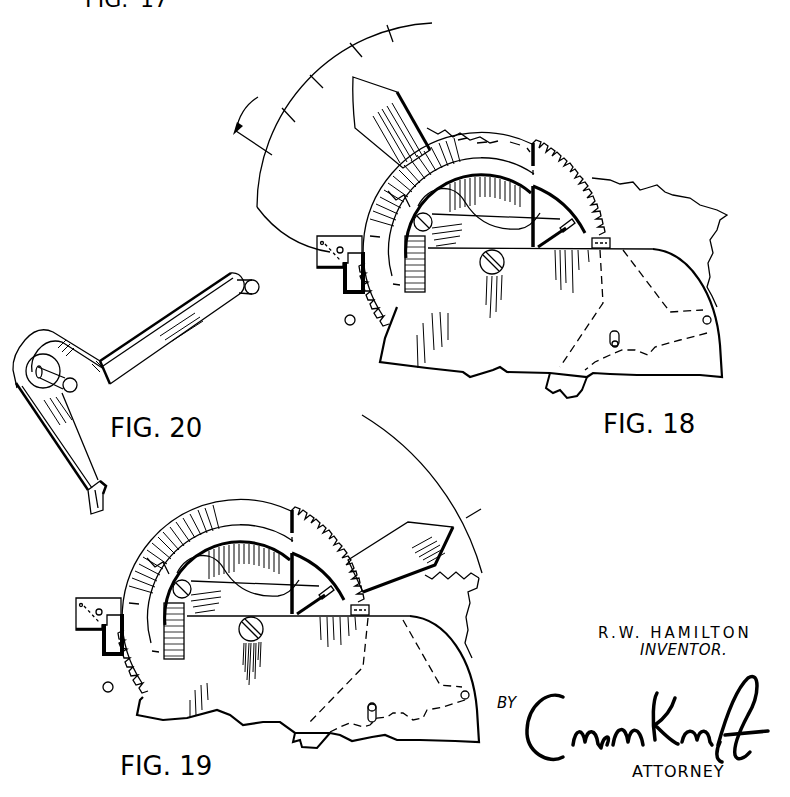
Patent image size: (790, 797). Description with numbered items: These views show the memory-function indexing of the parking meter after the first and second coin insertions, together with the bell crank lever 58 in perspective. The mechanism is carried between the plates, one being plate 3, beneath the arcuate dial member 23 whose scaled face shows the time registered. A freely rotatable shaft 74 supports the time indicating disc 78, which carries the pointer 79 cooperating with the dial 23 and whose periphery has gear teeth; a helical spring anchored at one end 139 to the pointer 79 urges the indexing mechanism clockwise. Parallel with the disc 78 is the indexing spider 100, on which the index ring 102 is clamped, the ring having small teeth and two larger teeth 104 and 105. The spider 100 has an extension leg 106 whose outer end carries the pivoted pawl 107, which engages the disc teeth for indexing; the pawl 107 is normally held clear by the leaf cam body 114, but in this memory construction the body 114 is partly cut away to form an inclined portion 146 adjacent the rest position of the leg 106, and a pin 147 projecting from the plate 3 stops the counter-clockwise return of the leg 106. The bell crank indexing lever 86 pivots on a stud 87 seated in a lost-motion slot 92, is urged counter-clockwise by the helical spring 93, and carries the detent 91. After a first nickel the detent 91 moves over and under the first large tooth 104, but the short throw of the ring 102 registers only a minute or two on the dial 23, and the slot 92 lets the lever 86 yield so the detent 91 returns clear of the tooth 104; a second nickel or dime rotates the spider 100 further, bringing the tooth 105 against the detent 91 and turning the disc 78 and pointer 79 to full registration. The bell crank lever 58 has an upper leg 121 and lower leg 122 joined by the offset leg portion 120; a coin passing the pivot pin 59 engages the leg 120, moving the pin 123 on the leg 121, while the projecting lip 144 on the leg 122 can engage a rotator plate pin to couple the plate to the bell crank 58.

In FIG. 18, the plate 3 is at (700, 369).
In FIG. 19, the plate 3 is at (450, 737).
In FIG. 18, the dial member 23 is at (377, 43).
In FIG. 19, the dial member 23 is at (470, 558).
In FIG. 20, the bell crank lever 58 is at (144, 393).
In FIG. 20, the pivot pin 59 is at (78, 386).
In FIG. 18, the shaft 74 is at (505, 264).
In FIG. 19, the shaft 74 is at (263, 640).
In FIG. 18, the time indicating disc 78 is at (561, 175).
In FIG. 19, the time indicating disc 78 is at (327, 554).
In FIG. 18, the indicator or pointer 79 is at (368, 120).
In FIG. 19, the indicator or pointer 79 is at (413, 533).
In FIG. 19, the bell crank indexing lever 86 is at (432, 680).
In FIG. 18, the stud 87 is at (621, 348).
In FIG. 19, the stud 87 is at (372, 705).
In FIG. 18, the stop pawl or detent 91 is at (612, 238).
In FIG. 19, the stop pawl or detent 91 is at (380, 603).
In FIG. 18, the elongated slot 92 is at (621, 334).
In FIG. 19, the elongated slot 92 is at (377, 718).
In FIG. 18, the helical spring 93 is at (714, 283).
In FIG. 19, the helical spring 93 is at (468, 623).
In FIG. 18, the indexing spider 100 is at (478, 233).
In FIG. 19, the indexing spider 100 is at (238, 603).
In FIG. 18, the index ring 102 is at (563, 198).
In FIG. 19, the index ring 102 is at (300, 545).
In FIG. 18, the large tooth 104 is at (589, 235).
In FIG. 19, the large tooth 104 is at (352, 603).
In FIG. 18, the large tooth 105 is at (406, 199).
In FIG. 19, the large tooth 105 is at (155, 572).
In FIG. 18, the extension leg 106 is at (323, 238).
In FIG. 19, the extension leg 106 is at (85, 600).
In FIG. 18, the pawl member 107 is at (343, 270).
In FIG. 19, the pawl member 107 is at (97, 628).
In FIG. 18, the leaf cam body 114 is at (499, 139).
In FIG. 19, the leaf cam body 114 is at (248, 507).
In FIG. 20, the offset leg portion 120 is at (77, 343).
In FIG. 20, the upper leg 121 is at (147, 343).
In FIG. 20, the lower leg 122 is at (63, 438).
In FIG. 20, the pin 123 is at (253, 295).
In FIG. 18, the spring anchor end 139 is at (419, 122).
In FIG. 20, the projecting lip or pin member 144 is at (103, 503).
In FIG. 18, the inclined portion 146 is at (382, 282).
In FIG. 19, the inclined portion 146 is at (140, 647).
In FIG. 18, the pin or shaft 147 is at (348, 326).
In FIG. 19, the pin or shaft 147 is at (103, 692).